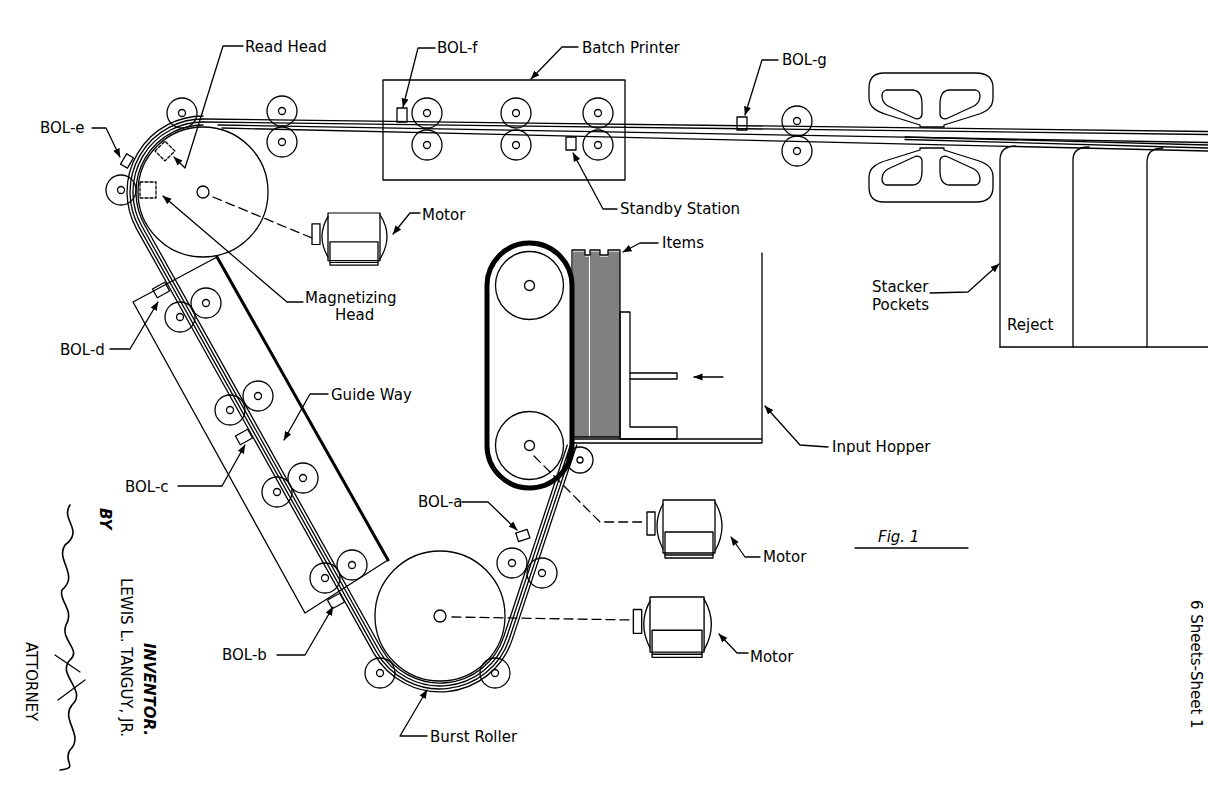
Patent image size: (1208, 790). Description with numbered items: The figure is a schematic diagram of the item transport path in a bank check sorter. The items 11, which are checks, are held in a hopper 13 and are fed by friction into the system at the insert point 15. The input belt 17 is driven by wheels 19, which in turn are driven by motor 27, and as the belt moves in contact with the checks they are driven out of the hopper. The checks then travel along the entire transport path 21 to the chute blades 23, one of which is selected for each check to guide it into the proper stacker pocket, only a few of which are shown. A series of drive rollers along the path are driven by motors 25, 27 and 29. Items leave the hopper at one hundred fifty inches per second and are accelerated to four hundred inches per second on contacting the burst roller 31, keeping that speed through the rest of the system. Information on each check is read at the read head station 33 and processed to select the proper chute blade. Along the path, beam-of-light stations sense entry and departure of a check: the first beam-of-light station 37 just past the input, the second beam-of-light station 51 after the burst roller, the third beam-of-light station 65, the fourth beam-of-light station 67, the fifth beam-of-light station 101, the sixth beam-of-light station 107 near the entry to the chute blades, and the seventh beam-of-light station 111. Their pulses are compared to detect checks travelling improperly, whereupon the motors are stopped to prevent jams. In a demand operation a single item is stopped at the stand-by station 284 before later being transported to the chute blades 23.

The items 11 is at (607, 302).
The hopper 13 is at (745, 335).
The insert point 15 is at (590, 459).
The input belt 17 is at (488, 373).
The wheels 19 is at (526, 302).
The transport path 21 is at (348, 128).
The chute blades 23 is at (1033, 140).
The motor 25 is at (665, 622).
The motor 27 is at (700, 520).
The motor 29 is at (348, 230).
The burst roller 31 is at (485, 633).
The read head station 33 is at (163, 140).
The BOL-a station 37 is at (526, 529).
The BOL-b station 51 is at (343, 612).
The BOL-c station 65 is at (241, 432).
The BOL-d station 67 is at (160, 288).
The BOL-e station 101 is at (122, 163).
The BOL-f station 107 is at (396, 112).
The BOL-g station 111 is at (736, 120).
The stand-by station 284 is at (567, 146).